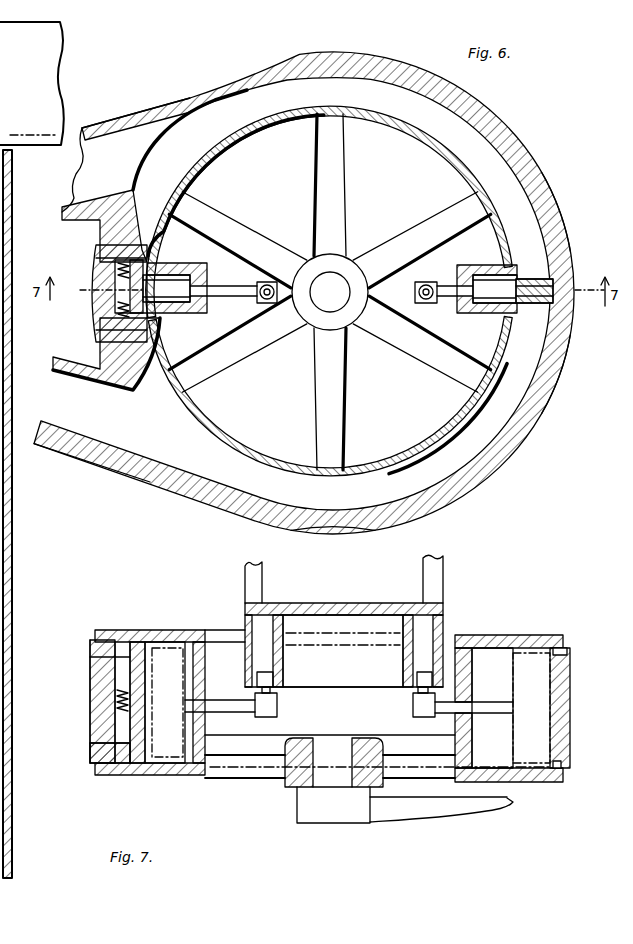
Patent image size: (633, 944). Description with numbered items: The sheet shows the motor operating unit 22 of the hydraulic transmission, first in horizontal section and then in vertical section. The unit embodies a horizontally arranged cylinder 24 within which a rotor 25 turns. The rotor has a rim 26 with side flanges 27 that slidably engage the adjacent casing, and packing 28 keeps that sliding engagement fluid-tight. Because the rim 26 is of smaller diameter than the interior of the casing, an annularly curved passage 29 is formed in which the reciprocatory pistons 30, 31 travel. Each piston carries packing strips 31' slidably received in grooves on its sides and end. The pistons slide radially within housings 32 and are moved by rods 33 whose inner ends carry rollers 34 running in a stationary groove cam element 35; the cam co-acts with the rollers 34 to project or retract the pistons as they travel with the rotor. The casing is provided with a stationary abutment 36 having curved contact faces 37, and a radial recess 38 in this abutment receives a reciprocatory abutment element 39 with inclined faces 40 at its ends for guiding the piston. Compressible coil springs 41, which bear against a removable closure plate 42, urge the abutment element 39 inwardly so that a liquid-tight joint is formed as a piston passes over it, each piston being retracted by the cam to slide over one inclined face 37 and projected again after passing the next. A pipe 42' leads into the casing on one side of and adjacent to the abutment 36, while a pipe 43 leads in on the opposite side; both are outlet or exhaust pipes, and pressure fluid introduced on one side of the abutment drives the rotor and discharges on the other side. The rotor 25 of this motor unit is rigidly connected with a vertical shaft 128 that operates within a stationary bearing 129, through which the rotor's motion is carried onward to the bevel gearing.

In FIG. 6, the operating unit 22 is at (304, 293).
In FIG. 7, the operating unit 22 is at (165, 630).
In FIG. 6, the cylinder 24 is at (331, 531).
In FIG. 7, the cylinder 24 is at (69, 701).
In FIG. 6, the rotor 25 is at (400, 446).
In FIG. 6, the rim 26 is at (288, 462).
In FIG. 7, the rim 26 is at (455, 724).
In FIG. 7, the side flanges 27 is at (505, 634).
In FIG. 7, the packing 28 is at (570, 652).
In FIG. 6, the annularly curved passage 29 is at (512, 208).
In FIG. 6, the piston 30 is at (178, 272).
In FIG. 7, the piston 30 is at (166, 745).
In FIG. 6, the piston 31 is at (573, 374).
In FIG. 7, the piston 31 is at (558, 708).
In FIG. 6, the packing strips 31' is at (390, 284).
In FIG. 6, the housing 32 is at (200, 268).
In FIG. 7, the housing 32 is at (192, 775).
In FIG. 6, the rod 33 is at (230, 285).
In FIG. 7, the rod 33 is at (242, 707).
In FIG. 6, the roller 34 is at (269, 282).
In FIG. 7, the roller 34 is at (285, 688).
In FIG. 7, the groove cam element 35 is at (350, 610).
In FIG. 6, the stationary abutment 36 is at (99, 289).
In FIG. 7, the stationary abutment 36 is at (80, 701).
In FIG. 6, the curved contact faces 37 is at (143, 228).
In FIG. 6, the radial recess 38 is at (122, 310).
In FIG. 7, the radial recess 38 is at (122, 750).
In FIG. 6, the reciprocatory abutment element 39 is at (110, 325).
In FIG. 7, the reciprocatory abutment element 39 is at (128, 642).
In FIG. 6, the inclined faces 40 is at (190, 224).
In FIG. 6, the compressible coil springs 41 is at (124, 270).
In FIG. 7, the compressible coil springs 41 is at (118, 690).
In FIG. 6, the removable closure plate 42 is at (79, 293).
In FIG. 7, the removable closure plate 42 is at (82, 705).
In FIG. 6, the pipe 42' is at (126, 149).
In FIG. 6, the pipe 43 is at (86, 440).
In FIG. 6, the vertical shaft 128 is at (336, 287).
In FIG. 7, the vertical shaft 128 is at (330, 782).
In FIG. 7, the stationary bearing 129 is at (352, 810).